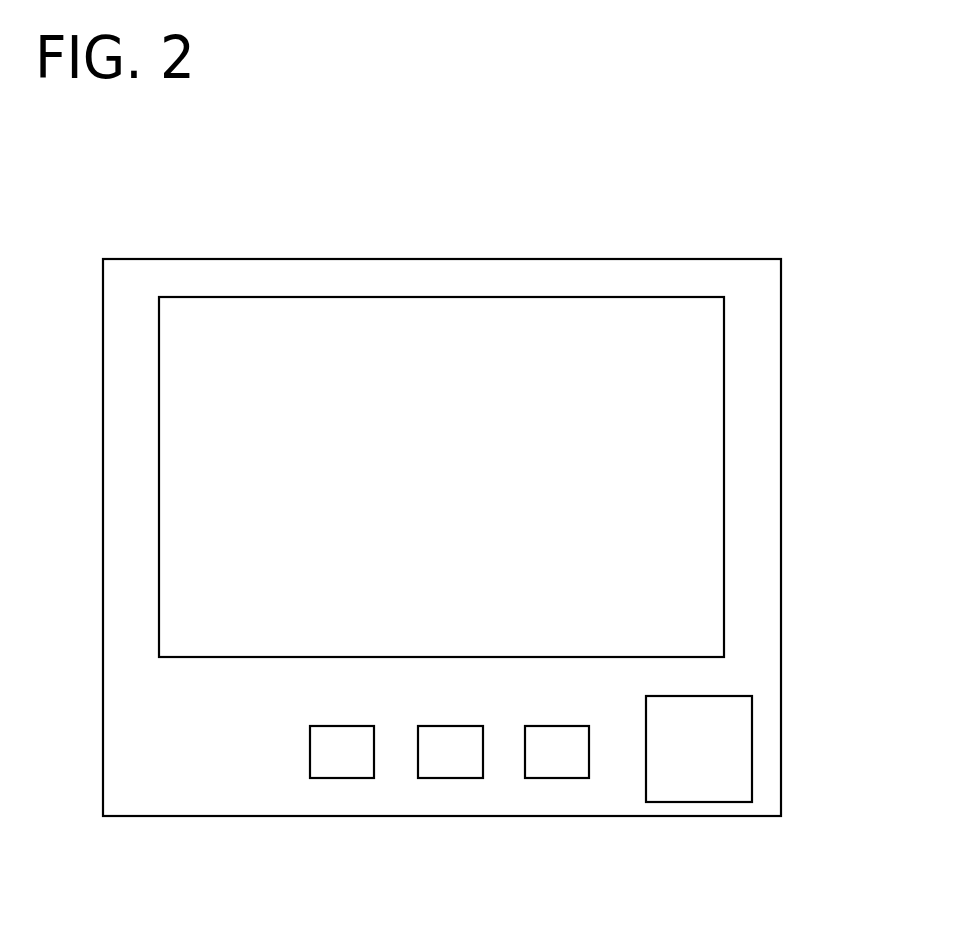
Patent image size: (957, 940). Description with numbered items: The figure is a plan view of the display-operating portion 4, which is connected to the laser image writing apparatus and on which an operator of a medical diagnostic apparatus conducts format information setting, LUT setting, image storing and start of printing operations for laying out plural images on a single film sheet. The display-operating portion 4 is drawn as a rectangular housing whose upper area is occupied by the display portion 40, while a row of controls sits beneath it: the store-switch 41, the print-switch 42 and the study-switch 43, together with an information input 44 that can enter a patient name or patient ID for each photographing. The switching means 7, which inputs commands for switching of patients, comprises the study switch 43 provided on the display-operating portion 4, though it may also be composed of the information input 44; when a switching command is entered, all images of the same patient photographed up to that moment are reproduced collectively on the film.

The display-operating portion 4 is at (781, 417).
The display portion 40 is at (708, 518).
The store-switch 41 is at (741, 754).
The print-switch 42 is at (568, 778).
The study-switch 43 is at (450, 778).
The information input 44 is at (355, 778).
The switching means 7 is at (397, 780).